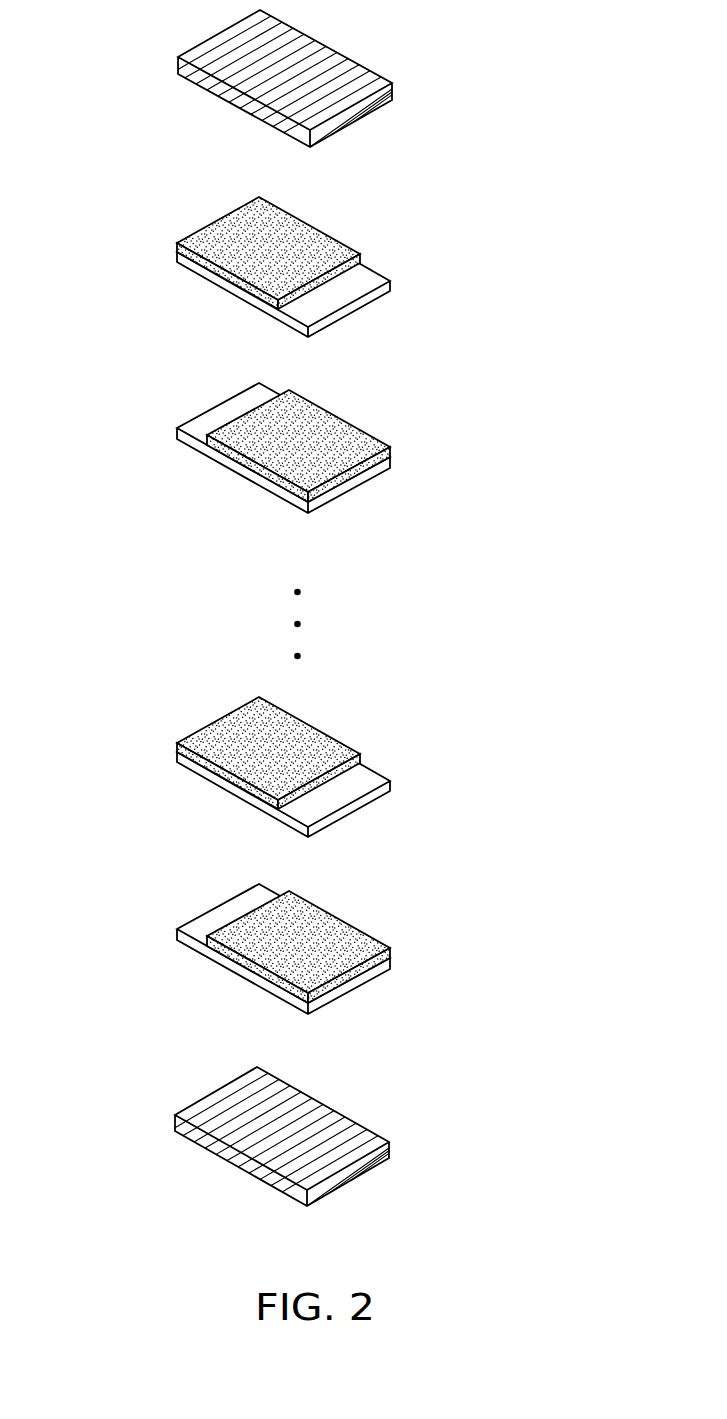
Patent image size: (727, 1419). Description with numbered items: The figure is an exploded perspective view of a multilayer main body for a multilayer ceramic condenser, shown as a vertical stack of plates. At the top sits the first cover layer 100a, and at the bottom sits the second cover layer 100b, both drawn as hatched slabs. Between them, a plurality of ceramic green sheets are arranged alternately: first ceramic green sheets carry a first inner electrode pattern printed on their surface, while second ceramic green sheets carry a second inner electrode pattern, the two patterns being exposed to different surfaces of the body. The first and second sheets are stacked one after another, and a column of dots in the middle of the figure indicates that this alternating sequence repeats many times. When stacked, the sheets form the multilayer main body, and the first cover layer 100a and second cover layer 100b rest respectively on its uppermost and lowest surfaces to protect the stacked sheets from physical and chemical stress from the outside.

The first cover layer 100a is at (333, 103).
The second cover layer 100b is at (332, 1160).